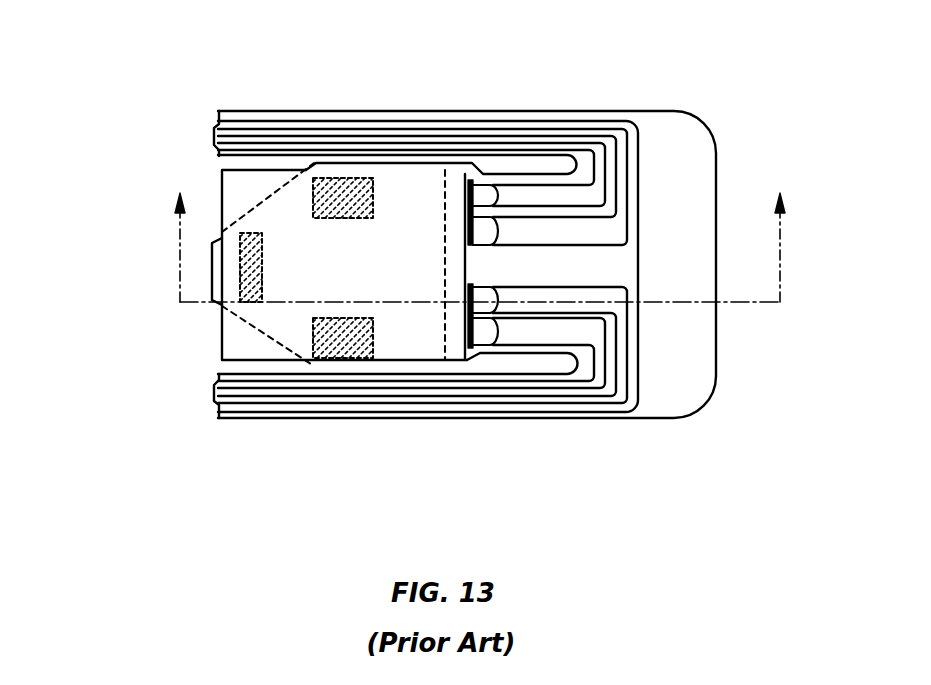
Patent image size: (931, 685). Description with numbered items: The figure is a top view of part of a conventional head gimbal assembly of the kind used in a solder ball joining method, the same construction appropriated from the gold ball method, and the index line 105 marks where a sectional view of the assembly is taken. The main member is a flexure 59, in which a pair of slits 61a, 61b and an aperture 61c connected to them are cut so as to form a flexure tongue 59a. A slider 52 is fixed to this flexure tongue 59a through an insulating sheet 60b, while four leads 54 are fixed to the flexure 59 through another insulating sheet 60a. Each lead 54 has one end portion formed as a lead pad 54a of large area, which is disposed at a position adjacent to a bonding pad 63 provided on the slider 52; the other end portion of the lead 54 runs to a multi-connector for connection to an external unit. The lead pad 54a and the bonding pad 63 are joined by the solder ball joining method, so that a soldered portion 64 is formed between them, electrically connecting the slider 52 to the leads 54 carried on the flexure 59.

The slider 52 is at (282, 207).
The lead 54 is at (582, 150).
The lead pad 54a is at (533, 305).
The flexure 59 is at (680, 173).
The flexure tongue 59a is at (218, 265).
The insulating sheet 60a is at (572, 270).
The insulating sheet 60b is at (342, 180).
The slit 61a is at (432, 160).
The slit 61b is at (483, 365).
The aperture 61c is at (218, 343).
The bonding pad 63 is at (462, 300).
The soldered portion 64 is at (495, 347).
The index line 105 is at (485, 231).